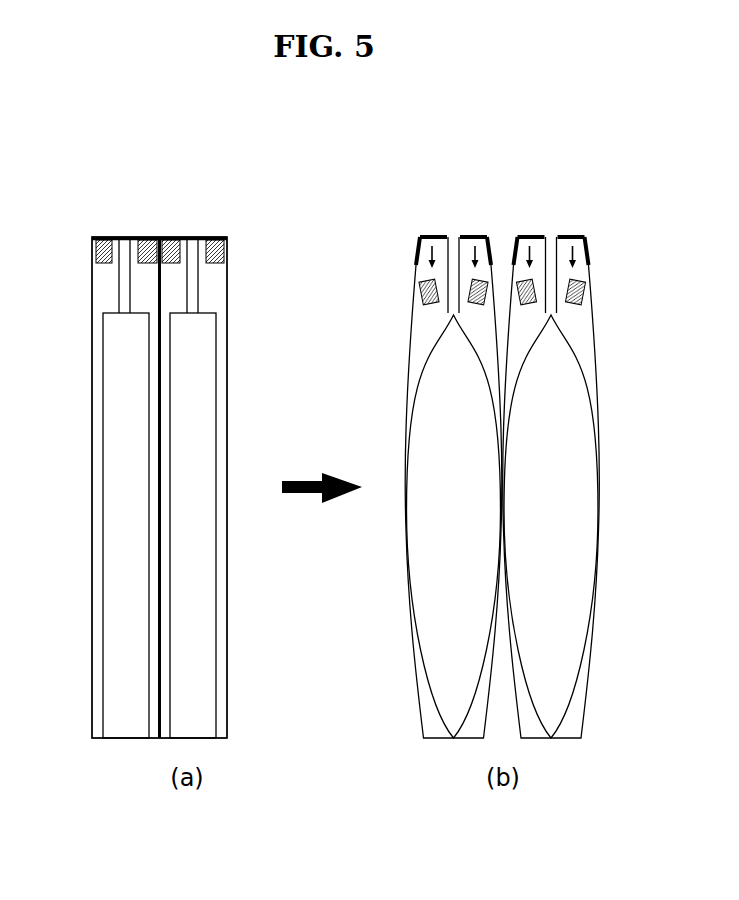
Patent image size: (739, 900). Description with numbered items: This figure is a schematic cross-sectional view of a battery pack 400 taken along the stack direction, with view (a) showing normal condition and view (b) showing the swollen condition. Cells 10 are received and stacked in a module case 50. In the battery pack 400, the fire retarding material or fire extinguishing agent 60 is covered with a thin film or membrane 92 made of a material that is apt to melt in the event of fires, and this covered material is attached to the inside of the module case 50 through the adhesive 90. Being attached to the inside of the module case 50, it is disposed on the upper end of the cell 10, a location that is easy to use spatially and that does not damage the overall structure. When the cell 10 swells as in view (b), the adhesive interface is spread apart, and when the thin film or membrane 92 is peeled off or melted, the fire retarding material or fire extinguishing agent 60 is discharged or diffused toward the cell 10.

The battery pack 400 is at (96, 158).
The cell 10 is at (113, 378).
The module case 50 is at (92, 320).
The fire retarding material or fire extinguishing agent 60 is at (217, 263).
The adhesive 90 is at (99, 236).
The thin film or membrane 92 is at (120, 248).